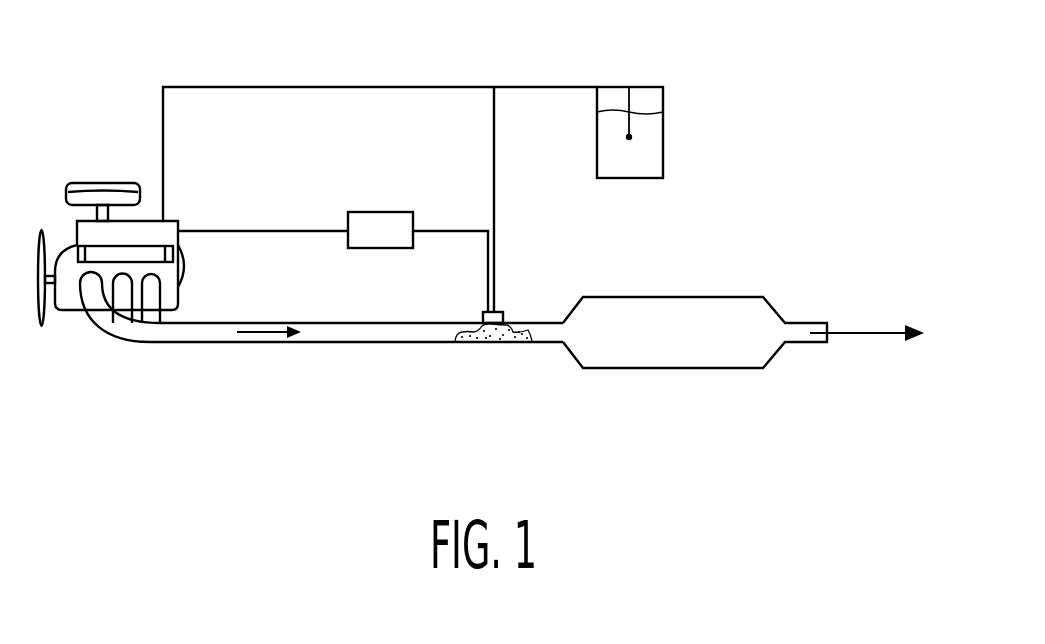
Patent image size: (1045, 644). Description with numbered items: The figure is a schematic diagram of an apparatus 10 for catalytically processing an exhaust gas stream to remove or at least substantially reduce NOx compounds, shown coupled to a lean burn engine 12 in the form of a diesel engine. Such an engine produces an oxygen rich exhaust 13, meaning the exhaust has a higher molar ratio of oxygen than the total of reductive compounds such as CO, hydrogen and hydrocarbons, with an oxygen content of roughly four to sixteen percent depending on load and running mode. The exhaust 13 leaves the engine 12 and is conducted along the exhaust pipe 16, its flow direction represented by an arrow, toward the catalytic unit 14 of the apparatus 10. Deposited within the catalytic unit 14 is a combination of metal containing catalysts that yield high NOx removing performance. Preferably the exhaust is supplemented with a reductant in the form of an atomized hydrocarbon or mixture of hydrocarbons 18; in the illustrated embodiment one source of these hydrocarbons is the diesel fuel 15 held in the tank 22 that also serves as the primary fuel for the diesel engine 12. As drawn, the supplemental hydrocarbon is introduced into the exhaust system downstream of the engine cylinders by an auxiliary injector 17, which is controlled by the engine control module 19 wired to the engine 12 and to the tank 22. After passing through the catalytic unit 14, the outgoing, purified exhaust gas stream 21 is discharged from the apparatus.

The apparatus 10 is at (585, 386).
The lean burn engine 12 is at (152, 220).
The oxygen rich exhaust 13 is at (263, 332).
The catalytic unit 14 is at (693, 307).
The diesel fuel 15 is at (648, 155).
The exhaust pipe 16 is at (220, 322).
The auxiliary injector 17 is at (505, 315).
The atomized hydrocarbon or mixture of hydrocarbons 18 is at (482, 342).
The engine control module 19 is at (380, 220).
The purified exhaust gas stream 21 is at (873, 330).
The tank 22 is at (665, 118).